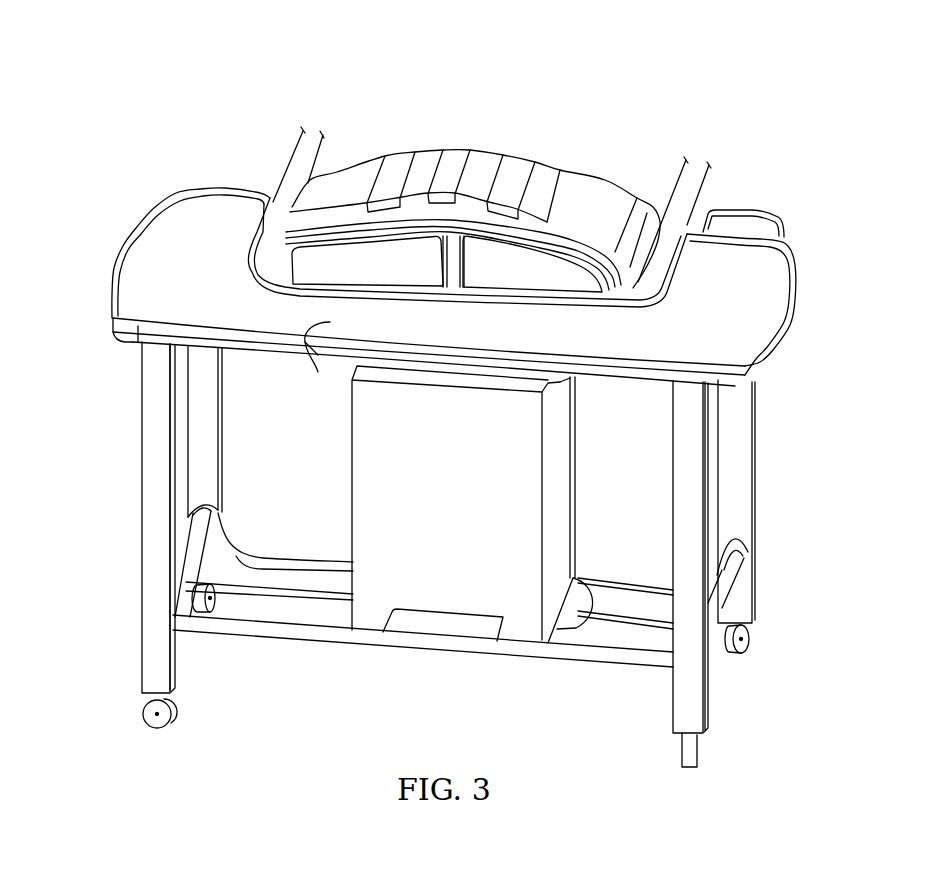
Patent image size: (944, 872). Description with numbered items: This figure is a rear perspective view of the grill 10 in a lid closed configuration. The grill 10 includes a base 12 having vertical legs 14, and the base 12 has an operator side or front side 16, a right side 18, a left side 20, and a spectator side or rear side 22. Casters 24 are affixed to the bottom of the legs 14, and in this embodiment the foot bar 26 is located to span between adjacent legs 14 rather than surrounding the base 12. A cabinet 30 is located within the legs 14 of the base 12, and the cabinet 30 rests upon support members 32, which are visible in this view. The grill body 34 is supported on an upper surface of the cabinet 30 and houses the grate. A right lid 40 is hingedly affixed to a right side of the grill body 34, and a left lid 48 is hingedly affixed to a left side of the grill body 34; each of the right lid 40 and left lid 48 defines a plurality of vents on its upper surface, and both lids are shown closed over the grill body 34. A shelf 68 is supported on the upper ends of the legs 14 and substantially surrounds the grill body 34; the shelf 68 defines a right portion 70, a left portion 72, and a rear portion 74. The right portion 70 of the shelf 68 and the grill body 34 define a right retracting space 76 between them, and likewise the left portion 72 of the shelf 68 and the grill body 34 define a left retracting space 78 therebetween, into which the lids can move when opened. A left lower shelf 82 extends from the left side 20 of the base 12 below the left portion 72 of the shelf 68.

The grill 10 is at (211, 52).
The base 12 is at (780, 676).
The vertical legs 14 is at (223, 441).
The front side 16 is at (528, 128).
The right side 18 is at (102, 500).
The left side 20 is at (780, 580).
The rear side 22 is at (386, 682).
The casters 24 is at (220, 599).
The foot bar 26 is at (205, 542).
The cabinet 30 is at (460, 511).
The support members 32 is at (588, 582).
The grill body 34 is at (590, 386).
The right lid 40 is at (367, 176).
The left lid 48 is at (670, 162).
The shelf 68 is at (104, 303).
The right portion 70 is at (138, 262).
The left portion 72 is at (785, 282).
The rear portion 74 is at (316, 364).
The right retracting space 76 is at (289, 131).
The left retracting space 78 is at (723, 181).
The left lower shelf 82 is at (766, 216).